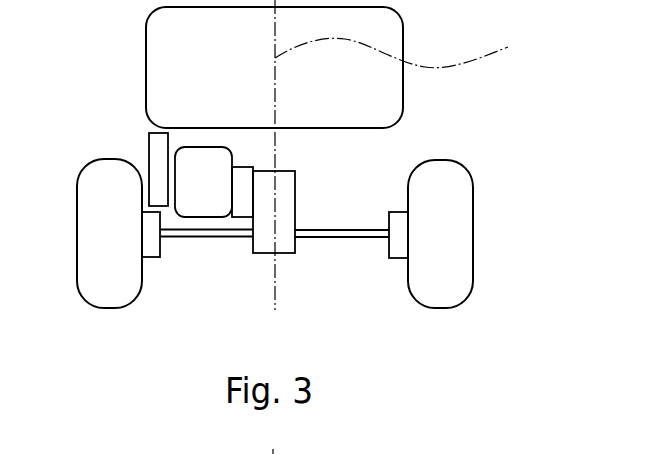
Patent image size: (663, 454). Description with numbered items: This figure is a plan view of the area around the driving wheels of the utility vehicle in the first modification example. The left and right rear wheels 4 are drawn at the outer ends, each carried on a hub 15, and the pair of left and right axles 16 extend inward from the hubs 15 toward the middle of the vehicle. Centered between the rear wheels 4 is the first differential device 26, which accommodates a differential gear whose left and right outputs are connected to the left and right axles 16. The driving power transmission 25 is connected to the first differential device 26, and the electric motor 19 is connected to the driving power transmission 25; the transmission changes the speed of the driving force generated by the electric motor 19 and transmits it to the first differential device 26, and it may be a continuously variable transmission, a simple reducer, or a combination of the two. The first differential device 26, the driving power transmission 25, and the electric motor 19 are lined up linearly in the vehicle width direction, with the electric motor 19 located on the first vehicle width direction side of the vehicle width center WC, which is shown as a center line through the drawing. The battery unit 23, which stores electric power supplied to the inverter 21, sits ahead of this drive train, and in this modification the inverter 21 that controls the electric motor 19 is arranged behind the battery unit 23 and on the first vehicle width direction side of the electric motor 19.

The rear wheel 4 is at (108, 305).
The hub 15 is at (150, 260).
The axle 16 is at (228, 237).
The electric motor 19 is at (196, 217).
The inverter 21 is at (150, 153).
The second battery unit 23 is at (160, 62).
The driving power transmission 25 is at (241, 165).
The first differential device 26 is at (288, 256).
The vehicle width center WC is at (412, 51).